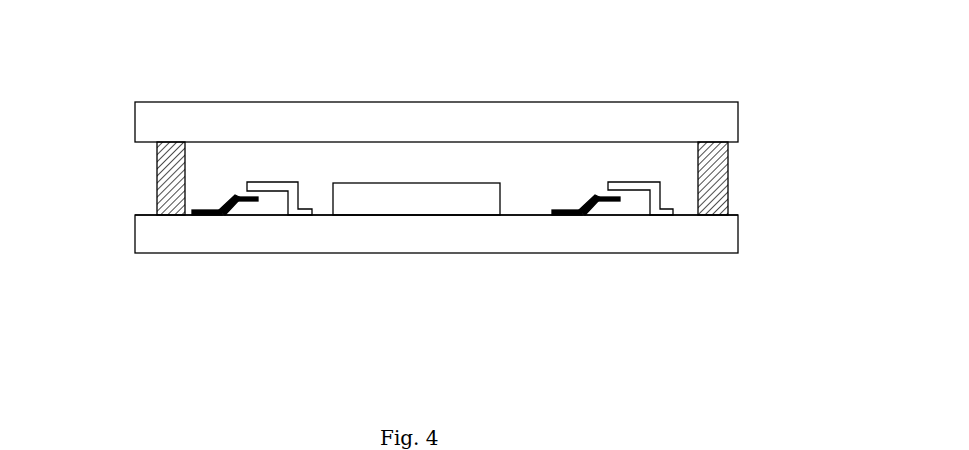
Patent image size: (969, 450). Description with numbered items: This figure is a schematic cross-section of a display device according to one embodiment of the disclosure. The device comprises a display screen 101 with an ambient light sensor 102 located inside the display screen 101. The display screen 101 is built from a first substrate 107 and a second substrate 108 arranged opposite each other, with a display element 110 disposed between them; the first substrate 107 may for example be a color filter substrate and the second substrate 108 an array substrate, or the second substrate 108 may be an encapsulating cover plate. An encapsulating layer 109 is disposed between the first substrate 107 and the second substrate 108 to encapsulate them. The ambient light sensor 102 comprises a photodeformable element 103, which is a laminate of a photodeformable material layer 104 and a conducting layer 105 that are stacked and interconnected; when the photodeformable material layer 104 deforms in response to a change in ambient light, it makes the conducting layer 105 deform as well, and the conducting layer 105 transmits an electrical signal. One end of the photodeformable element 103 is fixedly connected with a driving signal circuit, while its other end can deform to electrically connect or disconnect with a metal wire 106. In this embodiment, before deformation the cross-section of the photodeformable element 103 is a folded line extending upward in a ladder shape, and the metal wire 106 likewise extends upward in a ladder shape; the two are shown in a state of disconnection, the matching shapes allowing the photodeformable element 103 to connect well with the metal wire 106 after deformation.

The display screen 101 is at (499, 185).
The ambient light sensor 102 is at (580, 286).
The photodeformable element 103 is at (555, 271).
The photodeformable material layer 104 is at (535, 258).
The conducting layer 105 is at (588, 251).
The metal wire 106 is at (626, 265).
The first substrate 107 is at (456, 102).
The second substrate 108 is at (486, 234).
The encapsulating layer 109 is at (114, 178).
The display element 110 is at (409, 238).